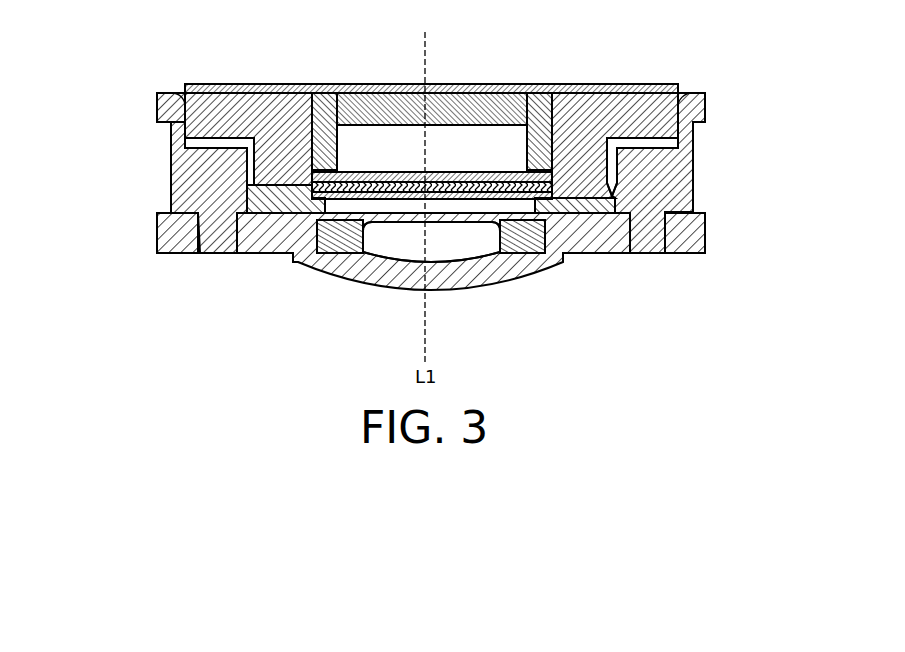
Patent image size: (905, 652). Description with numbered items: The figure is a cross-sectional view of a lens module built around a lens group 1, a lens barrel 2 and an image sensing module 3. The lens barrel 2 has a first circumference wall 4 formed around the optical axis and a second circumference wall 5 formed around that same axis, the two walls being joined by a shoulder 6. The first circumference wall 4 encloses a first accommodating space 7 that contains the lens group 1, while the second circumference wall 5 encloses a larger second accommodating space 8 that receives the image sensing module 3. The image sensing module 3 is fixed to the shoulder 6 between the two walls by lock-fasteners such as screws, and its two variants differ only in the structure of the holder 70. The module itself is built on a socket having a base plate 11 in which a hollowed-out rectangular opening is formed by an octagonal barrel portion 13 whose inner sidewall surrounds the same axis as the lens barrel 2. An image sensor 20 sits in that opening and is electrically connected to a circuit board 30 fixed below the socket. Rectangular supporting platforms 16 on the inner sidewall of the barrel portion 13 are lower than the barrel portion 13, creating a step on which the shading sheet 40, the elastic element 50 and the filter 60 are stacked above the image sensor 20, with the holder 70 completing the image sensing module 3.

The lens group 1 is at (448, 252).
The lens barrel 2 is at (92, 100).
The image sensing module 3 is at (535, 76).
The first circumference wall 4 is at (185, 215).
The second circumference wall 5 is at (186, 142).
The shoulder 6 is at (183, 187).
The first accommodating space 7 is at (185, 215).
The second accommodating space 8 is at (217, 142).
The base plate 11 is at (640, 110).
The barrel portion 13 is at (575, 150).
The supporting platform 16 is at (330, 100).
The image sensor 20 is at (450, 107).
The circuit board 30 is at (282, 84).
The shading sheet 40 is at (548, 196).
The elastic element 50 is at (550, 186).
The filter 60 is at (552, 175).
The holder 70 is at (615, 193).